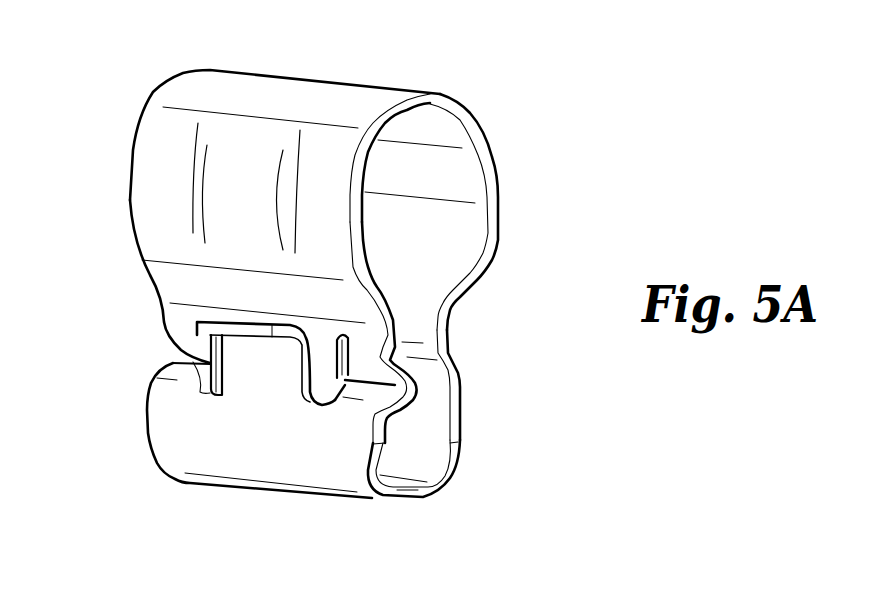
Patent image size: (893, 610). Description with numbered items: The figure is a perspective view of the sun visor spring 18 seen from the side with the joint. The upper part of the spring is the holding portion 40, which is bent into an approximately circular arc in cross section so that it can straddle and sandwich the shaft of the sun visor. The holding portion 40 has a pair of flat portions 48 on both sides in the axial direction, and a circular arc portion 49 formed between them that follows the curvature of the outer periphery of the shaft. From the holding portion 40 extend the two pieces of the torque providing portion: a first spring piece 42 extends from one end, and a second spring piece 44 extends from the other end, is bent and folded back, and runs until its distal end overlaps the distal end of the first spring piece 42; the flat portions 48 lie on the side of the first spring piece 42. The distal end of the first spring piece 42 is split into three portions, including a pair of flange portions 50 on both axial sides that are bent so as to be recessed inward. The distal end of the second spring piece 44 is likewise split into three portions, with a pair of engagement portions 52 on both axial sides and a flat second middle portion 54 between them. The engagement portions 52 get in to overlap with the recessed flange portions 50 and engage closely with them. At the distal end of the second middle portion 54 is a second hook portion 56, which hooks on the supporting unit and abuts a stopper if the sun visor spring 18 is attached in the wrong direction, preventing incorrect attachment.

The sun visor spring 18 is at (393, 545).
The holding portion 40 is at (498, 183).
The first spring piece 42 is at (321, 342).
The second spring piece 44 is at (460, 415).
The flat portions 48 is at (323, 180).
The circular arc portion 49 is at (230, 183).
The flange portions 50 is at (210, 361).
The engagement portions 52 is at (207, 362).
The second middle portion 54 is at (255, 355).
The second hook portion 56 is at (352, 371).